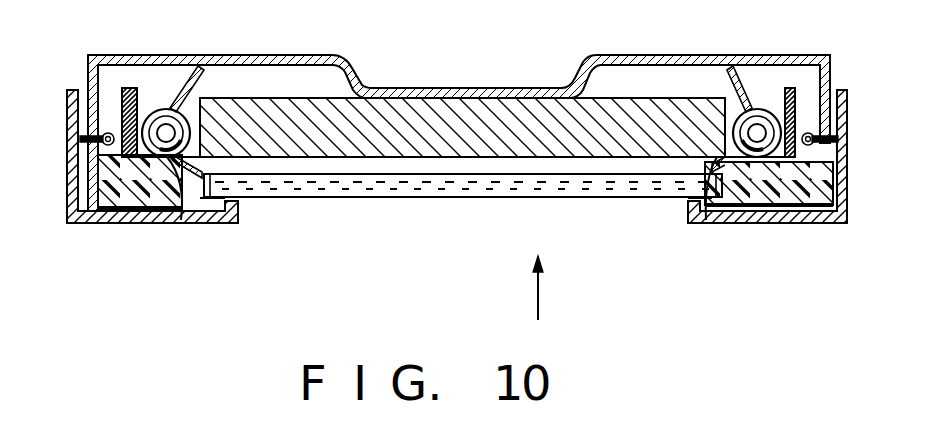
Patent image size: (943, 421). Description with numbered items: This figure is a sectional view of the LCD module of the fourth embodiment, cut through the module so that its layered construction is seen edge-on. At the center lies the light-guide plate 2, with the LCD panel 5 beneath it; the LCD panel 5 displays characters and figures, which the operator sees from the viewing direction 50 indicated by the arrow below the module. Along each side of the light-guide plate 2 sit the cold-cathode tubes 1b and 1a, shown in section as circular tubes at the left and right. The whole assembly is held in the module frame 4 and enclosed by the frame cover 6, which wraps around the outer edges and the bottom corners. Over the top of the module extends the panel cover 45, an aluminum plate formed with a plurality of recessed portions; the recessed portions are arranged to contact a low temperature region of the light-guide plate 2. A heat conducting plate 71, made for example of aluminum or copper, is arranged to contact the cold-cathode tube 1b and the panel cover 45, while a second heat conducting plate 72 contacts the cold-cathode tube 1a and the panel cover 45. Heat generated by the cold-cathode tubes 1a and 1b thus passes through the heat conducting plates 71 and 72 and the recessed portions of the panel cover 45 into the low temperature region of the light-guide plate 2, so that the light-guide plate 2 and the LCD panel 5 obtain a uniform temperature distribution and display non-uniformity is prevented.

The cold-cathode tube 1a is at (749, 108).
The cold-cathode tube 1b is at (181, 216).
The light-guide plate 2 is at (588, 122).
The module frame 4 is at (92, 187).
The LCD panel 5 is at (430, 199).
The frame cover 6 is at (139, 224).
The panel cover 45 is at (420, 88).
The viewing direction 50 is at (540, 297).
The heat conducting plate 71 is at (176, 108).
The heat conducting plate 72 is at (683, 26).